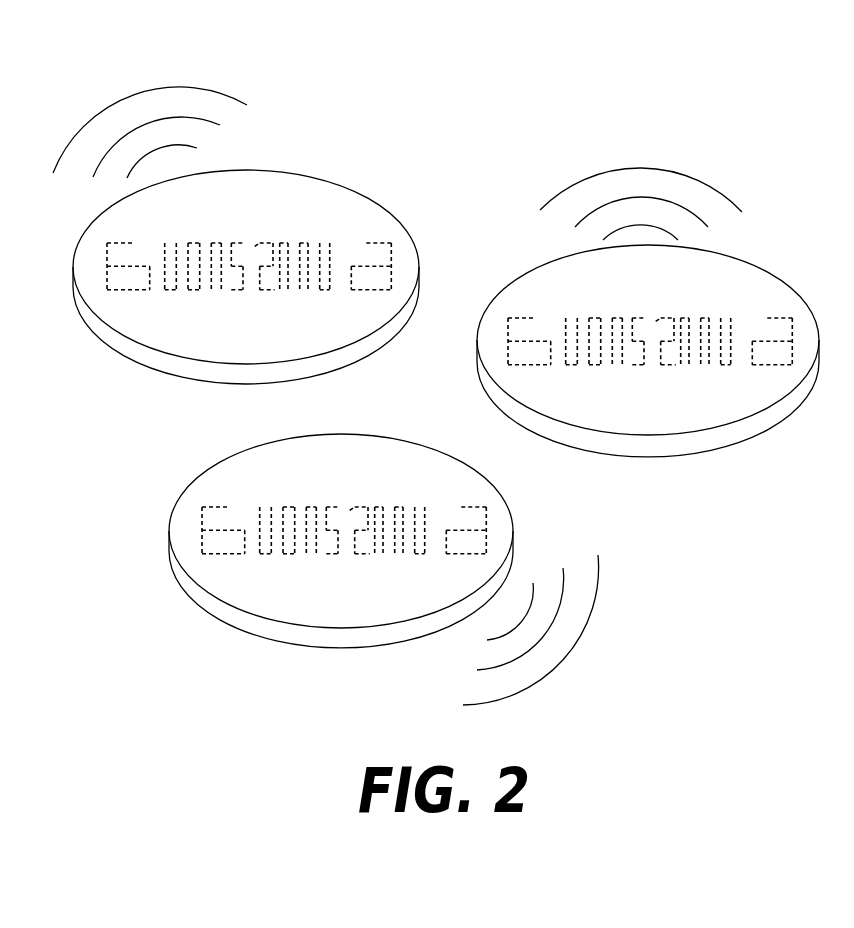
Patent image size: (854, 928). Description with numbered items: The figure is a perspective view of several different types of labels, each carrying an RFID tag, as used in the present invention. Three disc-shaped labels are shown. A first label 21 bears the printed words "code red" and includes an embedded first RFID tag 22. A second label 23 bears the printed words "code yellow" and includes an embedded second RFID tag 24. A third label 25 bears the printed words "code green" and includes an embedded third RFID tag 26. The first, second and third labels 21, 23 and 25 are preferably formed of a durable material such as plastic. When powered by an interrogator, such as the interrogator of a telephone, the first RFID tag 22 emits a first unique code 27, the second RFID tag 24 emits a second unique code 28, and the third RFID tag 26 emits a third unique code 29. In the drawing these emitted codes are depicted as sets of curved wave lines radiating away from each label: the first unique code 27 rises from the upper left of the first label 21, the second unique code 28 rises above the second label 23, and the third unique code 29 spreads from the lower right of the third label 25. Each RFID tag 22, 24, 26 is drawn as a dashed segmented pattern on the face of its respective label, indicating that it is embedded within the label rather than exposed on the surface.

The first label 21 is at (355, 192).
The first RFID tag 22 is at (249, 326).
The second label 23 is at (758, 263).
The second RFID tag 24 is at (650, 402).
The third label 25 is at (383, 438).
The third RFID tag 26 is at (344, 588).
The first unique code 27 is at (228, 90).
The second unique code 28 is at (690, 172).
The third unique code 29 is at (588, 620).